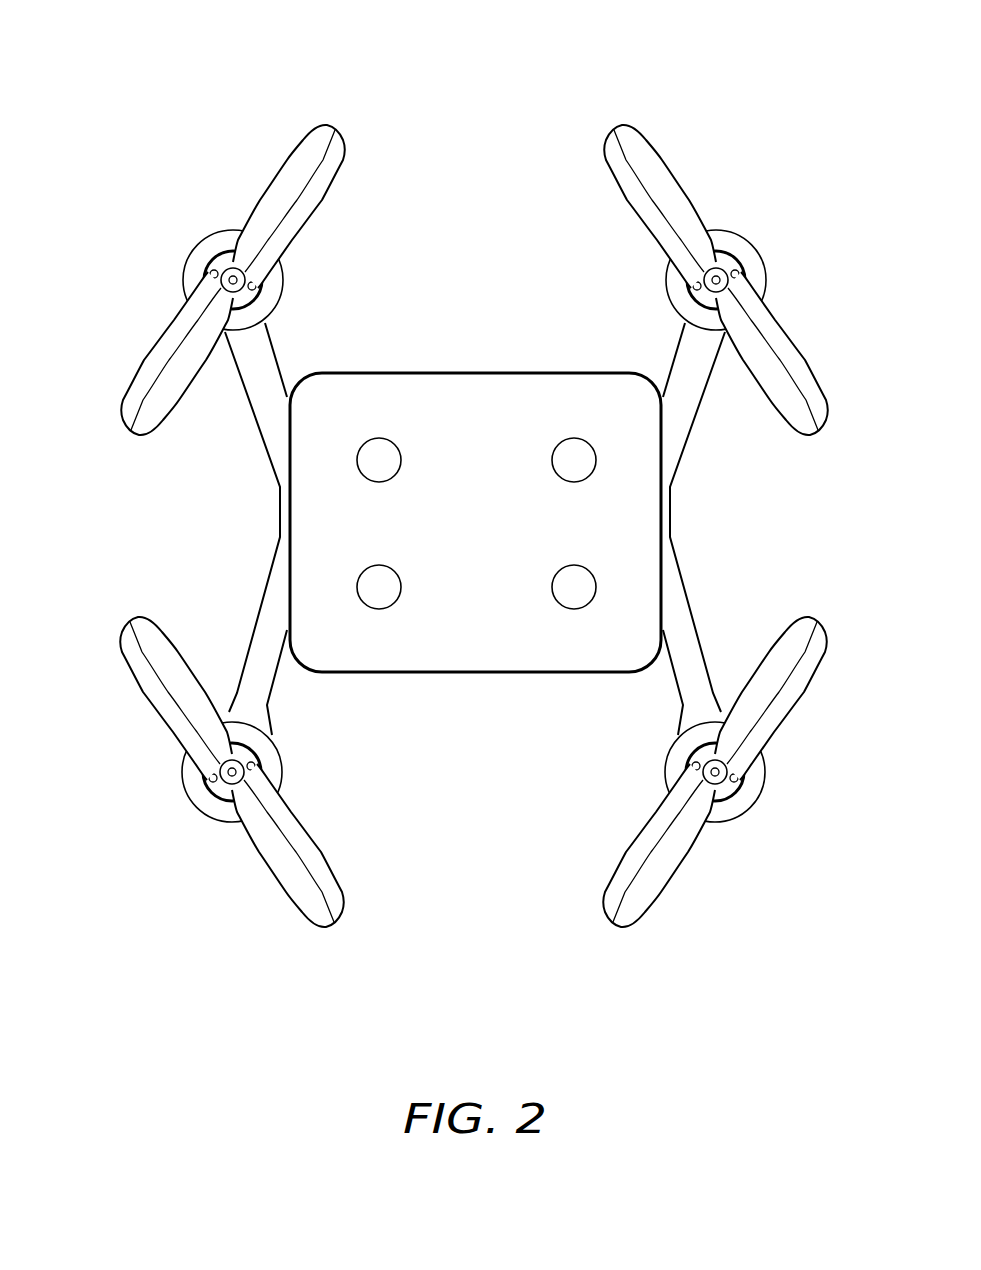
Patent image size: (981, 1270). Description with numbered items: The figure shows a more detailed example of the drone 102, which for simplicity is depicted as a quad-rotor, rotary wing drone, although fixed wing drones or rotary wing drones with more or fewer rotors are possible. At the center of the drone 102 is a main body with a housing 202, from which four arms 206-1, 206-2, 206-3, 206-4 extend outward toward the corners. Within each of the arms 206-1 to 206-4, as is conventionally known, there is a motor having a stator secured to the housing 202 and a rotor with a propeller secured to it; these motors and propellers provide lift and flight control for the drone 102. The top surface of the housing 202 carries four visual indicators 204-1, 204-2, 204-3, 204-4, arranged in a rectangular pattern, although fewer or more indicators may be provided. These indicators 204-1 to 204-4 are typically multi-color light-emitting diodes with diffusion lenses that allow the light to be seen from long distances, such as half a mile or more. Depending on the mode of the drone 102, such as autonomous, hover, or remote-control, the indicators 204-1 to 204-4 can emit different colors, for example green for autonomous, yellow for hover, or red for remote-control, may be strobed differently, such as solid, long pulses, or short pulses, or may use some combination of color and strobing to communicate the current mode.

The drone 102 is at (156, 71).
The housing 202 is at (630, 517).
The visual indicator 204-1 is at (373, 442).
The visual indicator 204-2 is at (568, 442).
The visual indicator 204-3 is at (373, 605).
The visual indicator 204-4 is at (568, 605).
The arm 206-1 is at (158, 340).
The arm 206-2 is at (800, 348).
The arm 206-3 is at (293, 905).
The arm 206-4 is at (677, 877).